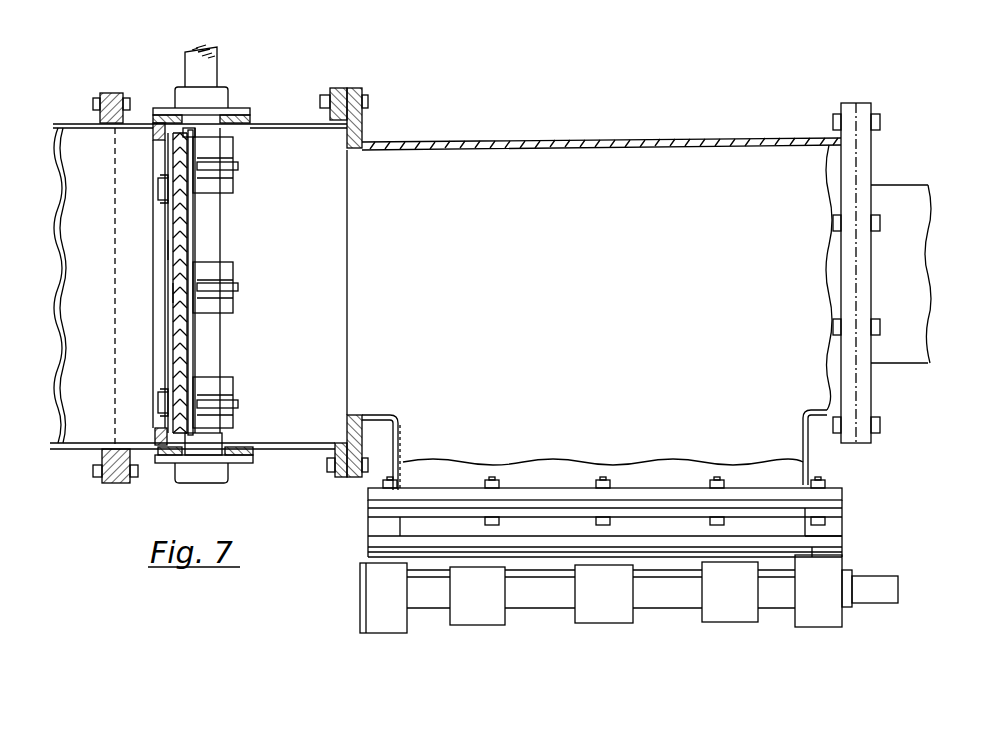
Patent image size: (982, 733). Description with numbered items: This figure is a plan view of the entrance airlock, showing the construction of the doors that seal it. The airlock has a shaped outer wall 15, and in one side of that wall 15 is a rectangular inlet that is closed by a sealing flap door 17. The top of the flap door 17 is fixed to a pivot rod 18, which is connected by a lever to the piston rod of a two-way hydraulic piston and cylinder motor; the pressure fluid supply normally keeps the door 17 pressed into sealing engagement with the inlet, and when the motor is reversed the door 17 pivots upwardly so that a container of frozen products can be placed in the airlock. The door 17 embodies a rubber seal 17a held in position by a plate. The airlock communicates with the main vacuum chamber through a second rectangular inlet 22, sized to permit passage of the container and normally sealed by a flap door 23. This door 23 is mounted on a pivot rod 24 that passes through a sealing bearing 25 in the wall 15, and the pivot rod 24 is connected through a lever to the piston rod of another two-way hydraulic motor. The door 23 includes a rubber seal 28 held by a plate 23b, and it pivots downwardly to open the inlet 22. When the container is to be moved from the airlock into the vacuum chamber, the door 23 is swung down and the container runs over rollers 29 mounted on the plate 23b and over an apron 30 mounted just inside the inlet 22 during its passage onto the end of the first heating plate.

The outer wall 15 is at (525, 140).
The flap door 17 is at (688, 578).
The rubber seal 17a is at (795, 553).
The pivot rod 18 is at (555, 598).
The inlet 22 is at (176, 145).
The flap door 23 is at (192, 207).
The plate 23b is at (180, 250).
The pivot rod 24 is at (210, 345).
The sealing bearing 25 is at (215, 93).
The rubber seal 28 is at (175, 293).
The rollers 29 is at (160, 188).
The apron 30 is at (73, 192).